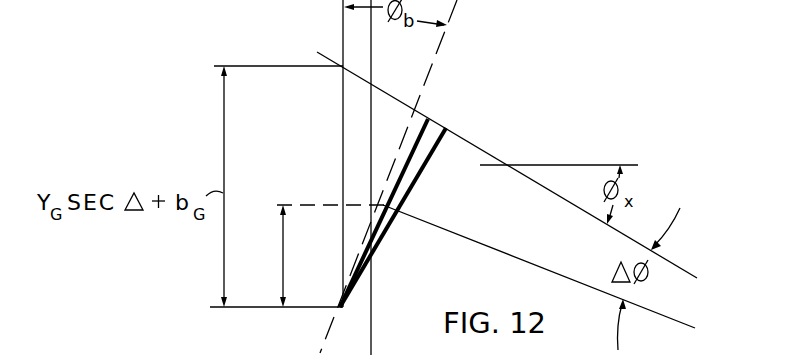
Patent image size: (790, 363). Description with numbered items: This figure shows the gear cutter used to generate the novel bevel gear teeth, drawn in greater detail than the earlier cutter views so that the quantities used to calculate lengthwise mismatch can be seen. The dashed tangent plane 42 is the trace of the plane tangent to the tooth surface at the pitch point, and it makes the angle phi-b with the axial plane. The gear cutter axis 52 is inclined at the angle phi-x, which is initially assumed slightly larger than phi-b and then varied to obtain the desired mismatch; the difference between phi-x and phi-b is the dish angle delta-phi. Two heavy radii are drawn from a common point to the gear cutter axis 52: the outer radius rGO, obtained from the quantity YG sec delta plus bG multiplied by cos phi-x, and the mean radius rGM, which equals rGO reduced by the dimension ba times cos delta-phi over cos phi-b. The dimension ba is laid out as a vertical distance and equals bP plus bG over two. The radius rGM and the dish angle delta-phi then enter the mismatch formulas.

The tangent plane 42 is at (431, 71).
The gear cutter axis 52 is at (482, 148).
The gear cutter mean radius rGM is at (422, 143).
The gear cutter outer radius rGO is at (419, 176).
The addendum dimension ba is at (326, 256).